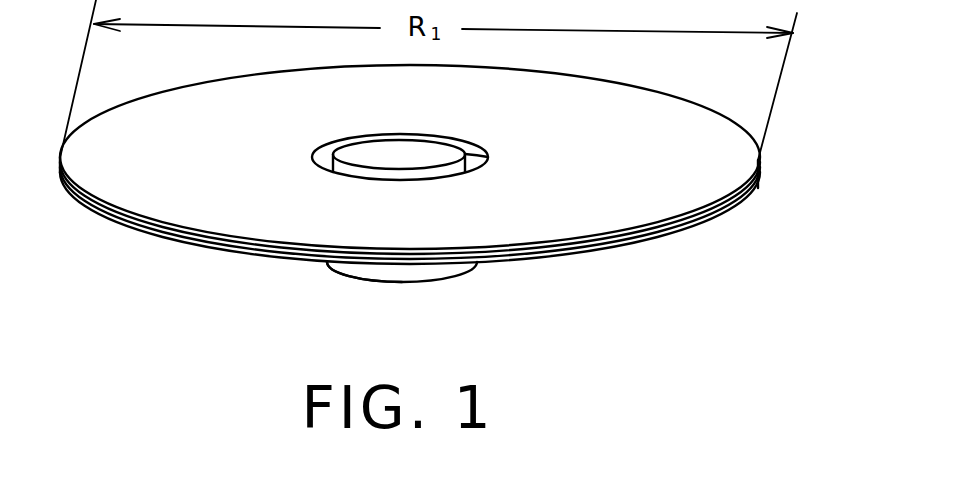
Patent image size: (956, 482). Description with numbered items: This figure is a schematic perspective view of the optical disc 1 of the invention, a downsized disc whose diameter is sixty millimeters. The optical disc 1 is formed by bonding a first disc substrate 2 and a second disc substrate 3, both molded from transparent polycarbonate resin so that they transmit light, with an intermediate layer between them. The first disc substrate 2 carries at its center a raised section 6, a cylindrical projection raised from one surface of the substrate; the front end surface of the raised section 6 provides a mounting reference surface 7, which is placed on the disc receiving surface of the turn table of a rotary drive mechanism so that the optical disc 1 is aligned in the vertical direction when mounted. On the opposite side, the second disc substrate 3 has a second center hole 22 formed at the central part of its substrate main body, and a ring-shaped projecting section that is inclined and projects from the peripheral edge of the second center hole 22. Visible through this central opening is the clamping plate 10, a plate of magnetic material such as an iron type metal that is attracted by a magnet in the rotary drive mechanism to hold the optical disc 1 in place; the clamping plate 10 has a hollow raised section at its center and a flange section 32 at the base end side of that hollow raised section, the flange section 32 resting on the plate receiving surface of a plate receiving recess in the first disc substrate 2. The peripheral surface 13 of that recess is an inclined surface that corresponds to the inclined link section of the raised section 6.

The optical disc 1 is at (695, 125).
The first disc substrate 2 is at (745, 210).
The second disc substrate 3 is at (756, 189).
The raised section 6 is at (470, 270).
The mounting reference surface 7 is at (367, 280).
The clamping plate 10 is at (360, 148).
The peripheral surface 13 is at (483, 152).
The second center hole 22 is at (463, 143).
The flange section 32 is at (415, 150).